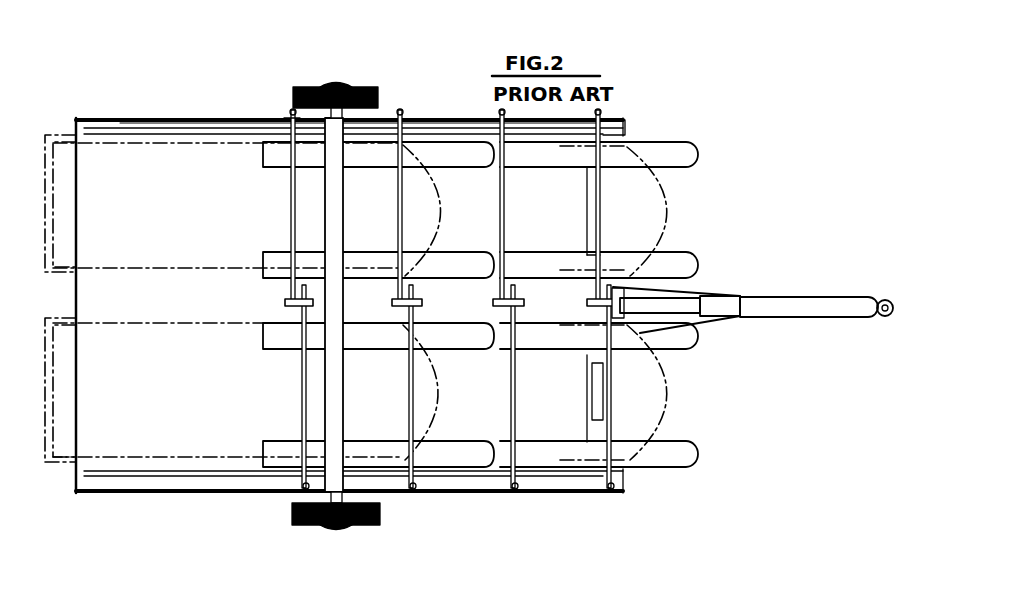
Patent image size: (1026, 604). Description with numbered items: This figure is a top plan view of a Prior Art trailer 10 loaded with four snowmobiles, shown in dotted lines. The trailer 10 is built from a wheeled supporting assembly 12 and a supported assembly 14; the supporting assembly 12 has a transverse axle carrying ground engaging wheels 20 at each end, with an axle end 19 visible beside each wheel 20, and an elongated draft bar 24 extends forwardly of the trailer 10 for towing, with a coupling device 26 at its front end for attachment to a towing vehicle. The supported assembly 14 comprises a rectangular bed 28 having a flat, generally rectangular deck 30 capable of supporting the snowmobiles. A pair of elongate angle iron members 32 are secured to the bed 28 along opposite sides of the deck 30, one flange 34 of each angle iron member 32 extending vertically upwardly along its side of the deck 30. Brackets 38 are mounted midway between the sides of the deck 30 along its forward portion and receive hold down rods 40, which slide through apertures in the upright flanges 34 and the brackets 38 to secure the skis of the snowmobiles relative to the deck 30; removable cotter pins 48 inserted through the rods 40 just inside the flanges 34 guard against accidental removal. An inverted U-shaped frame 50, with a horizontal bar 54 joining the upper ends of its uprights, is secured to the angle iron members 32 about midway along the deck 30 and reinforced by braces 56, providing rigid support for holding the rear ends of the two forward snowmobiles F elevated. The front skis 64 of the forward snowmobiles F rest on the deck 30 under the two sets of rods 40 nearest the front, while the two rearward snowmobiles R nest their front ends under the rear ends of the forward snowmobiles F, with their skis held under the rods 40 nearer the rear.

The trailer 10 is at (95, 78).
The wheeled supporting assembly 12 is at (383, 533).
The supported assembly 14 is at (180, 108).
The upper clamp bracket 19 is at (363, 86).
The ground engaging wheels 20 is at (305, 86).
The draft bar 24 is at (765, 297).
The coupling device 26 is at (878, 297).
The bed 28 is at (73, 432).
The deck 30 is at (232, 304).
The angle iron members 32 is at (126, 117).
The flange 34 is at (211, 117).
The brackets 38 is at (493, 303).
The hold down rods 40 is at (290, 210).
The cotter pins 48 is at (412, 117).
The inverted U-shaped frame 50 is at (320, 403).
The horizontal bar 54 is at (320, 430).
The braces 56 is at (275, 117).
The front skis 64 is at (457, 252).
The forward snowmobiles F is at (667, 204).
The rearward snowmobiles R is at (157, 322).